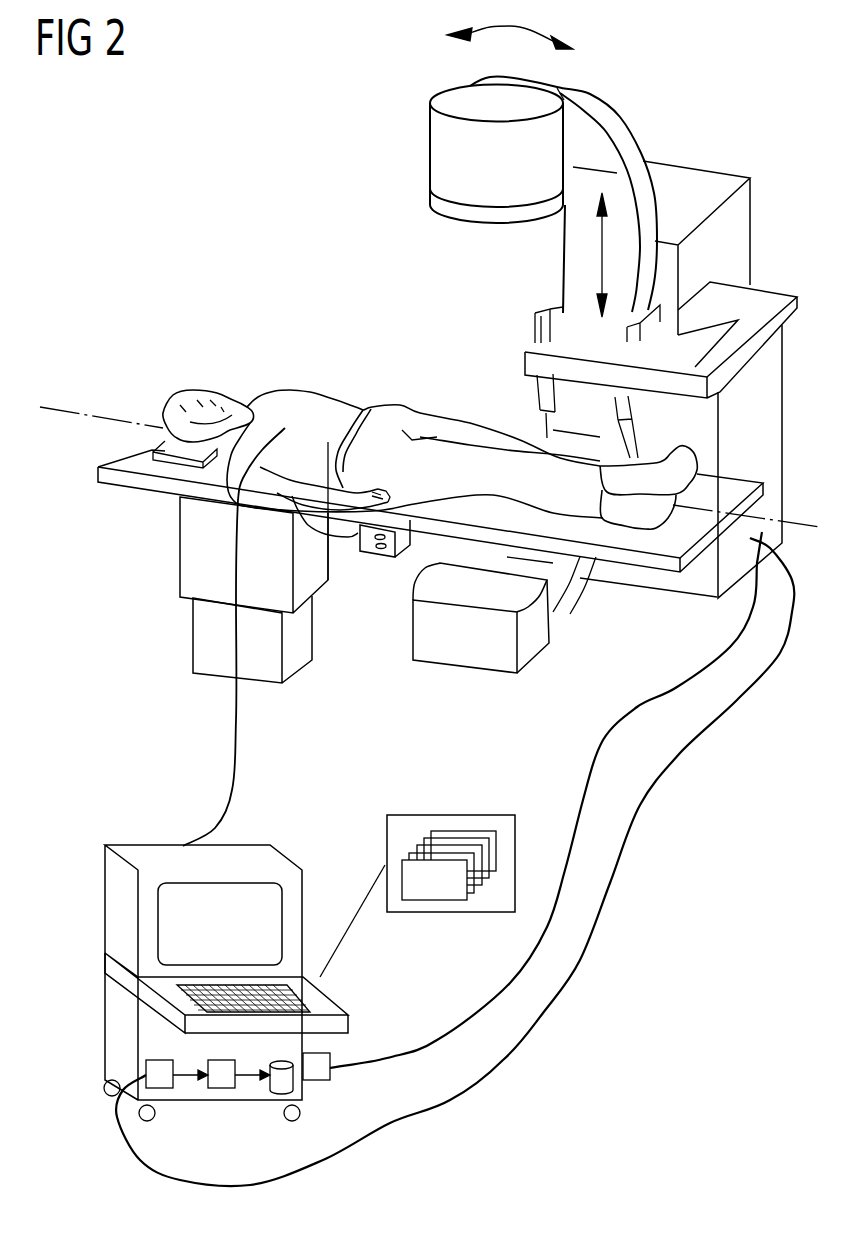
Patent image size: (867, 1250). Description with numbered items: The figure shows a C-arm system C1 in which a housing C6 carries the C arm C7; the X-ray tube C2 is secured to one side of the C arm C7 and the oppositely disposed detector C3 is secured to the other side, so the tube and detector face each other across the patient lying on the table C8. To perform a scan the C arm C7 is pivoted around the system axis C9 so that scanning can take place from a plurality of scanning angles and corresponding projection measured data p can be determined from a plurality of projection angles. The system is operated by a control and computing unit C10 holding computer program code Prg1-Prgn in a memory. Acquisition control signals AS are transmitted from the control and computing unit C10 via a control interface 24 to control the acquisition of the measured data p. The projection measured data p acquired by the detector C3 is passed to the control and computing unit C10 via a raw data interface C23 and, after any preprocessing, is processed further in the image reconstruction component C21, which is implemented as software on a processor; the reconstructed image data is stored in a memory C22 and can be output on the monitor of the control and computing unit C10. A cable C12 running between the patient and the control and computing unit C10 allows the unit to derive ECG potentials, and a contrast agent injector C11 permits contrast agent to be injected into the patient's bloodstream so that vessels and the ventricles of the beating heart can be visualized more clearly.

The C-arm system C1 is at (479, 359).
The X-ray tube C2 is at (438, 153).
The detector C3 is at (535, 645).
The housing C6 is at (742, 208).
The C arm C7 is at (620, 128).
The patient table C8 is at (123, 480).
The system axis C9 is at (93, 408).
The control and computing unit C10 is at (215, 1001).
The contrast agent injector C11 is at (367, 543).
The cable C12 is at (240, 745).
The image reconstruction component C21 is at (220, 1088).
The memory C22 is at (295, 1082).
The raw data interface C23 is at (160, 1088).
The control interface 24 is at (330, 1063).
The acquisition control signals AS is at (581, 778).
The projection measured data P is at (618, 865).
The computer program code Prg1-Prgn is at (430, 900).